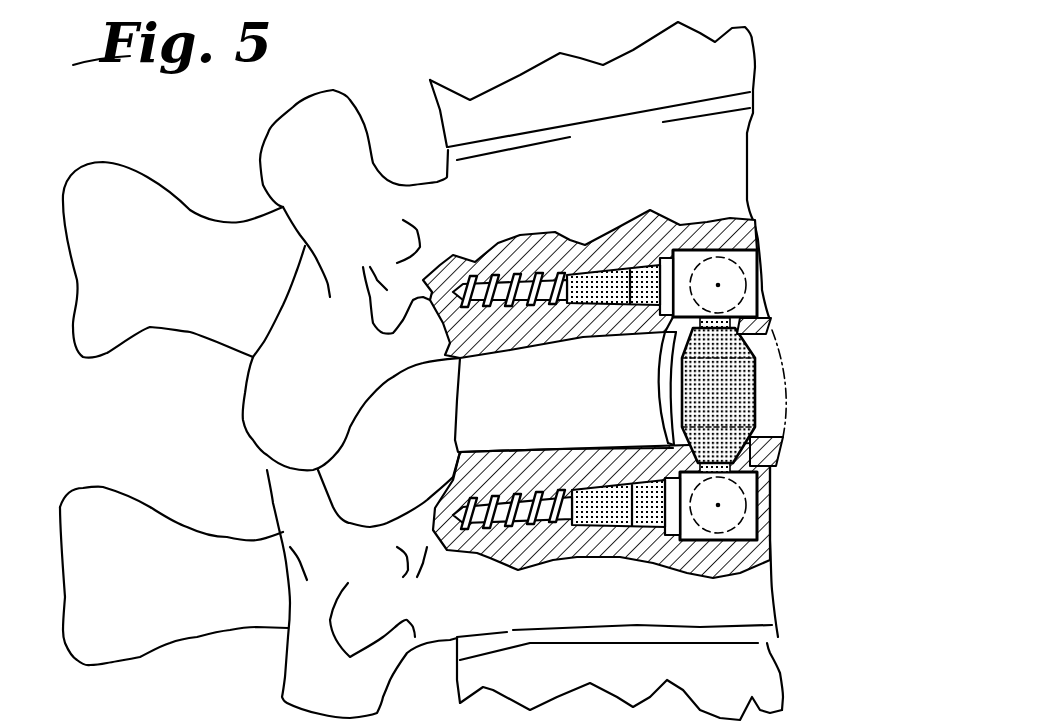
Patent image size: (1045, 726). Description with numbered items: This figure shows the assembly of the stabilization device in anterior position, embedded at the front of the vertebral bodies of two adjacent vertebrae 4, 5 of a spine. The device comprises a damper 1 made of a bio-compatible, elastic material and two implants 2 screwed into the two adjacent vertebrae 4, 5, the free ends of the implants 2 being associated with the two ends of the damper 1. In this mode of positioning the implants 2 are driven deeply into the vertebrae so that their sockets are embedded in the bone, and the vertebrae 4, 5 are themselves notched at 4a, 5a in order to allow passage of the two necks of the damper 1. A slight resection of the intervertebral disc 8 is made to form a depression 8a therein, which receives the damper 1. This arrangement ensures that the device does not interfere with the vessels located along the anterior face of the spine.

The damper 1 is at (761, 392).
The implant 2 is at (587, 275).
The vertebra 4 is at (753, 603).
The notch in vertebra 4a is at (752, 458).
The vertebra 5 is at (730, 155).
The notch in vertebra 5a is at (743, 324).
The intervertebral disc 8 is at (743, 50).
The depression 8a is at (667, 389).